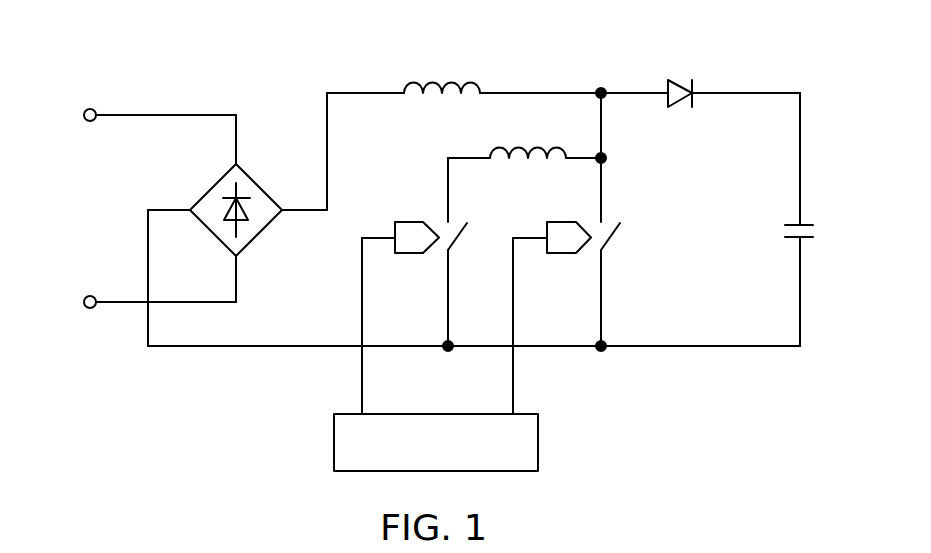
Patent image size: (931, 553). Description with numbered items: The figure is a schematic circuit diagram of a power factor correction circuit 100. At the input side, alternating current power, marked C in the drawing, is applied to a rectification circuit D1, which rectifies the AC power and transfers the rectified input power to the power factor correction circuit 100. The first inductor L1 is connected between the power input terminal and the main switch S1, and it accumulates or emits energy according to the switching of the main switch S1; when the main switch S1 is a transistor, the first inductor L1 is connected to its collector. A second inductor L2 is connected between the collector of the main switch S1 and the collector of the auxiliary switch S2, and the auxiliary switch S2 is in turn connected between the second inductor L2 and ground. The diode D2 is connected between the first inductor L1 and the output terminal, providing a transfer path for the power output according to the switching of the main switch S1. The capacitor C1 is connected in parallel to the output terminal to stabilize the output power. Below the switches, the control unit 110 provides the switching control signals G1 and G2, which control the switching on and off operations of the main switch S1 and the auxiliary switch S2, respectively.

The power factor correction circuit 100 is at (231, 40).
The control unit 110 is at (538, 442).
The AC input C is at (144, 208).
The rectification circuit D1 is at (228, 209).
The diode D2 is at (680, 78).
The first inductor L1 is at (442, 73).
The second inductor L2 is at (524, 155).
The main switch S1 is at (622, 284).
The auxiliary switch S2 is at (469, 252).
The switching control signal G1 is at (552, 318).
The switching control signal G2 is at (400, 318).
The capacitor C1 is at (815, 219).